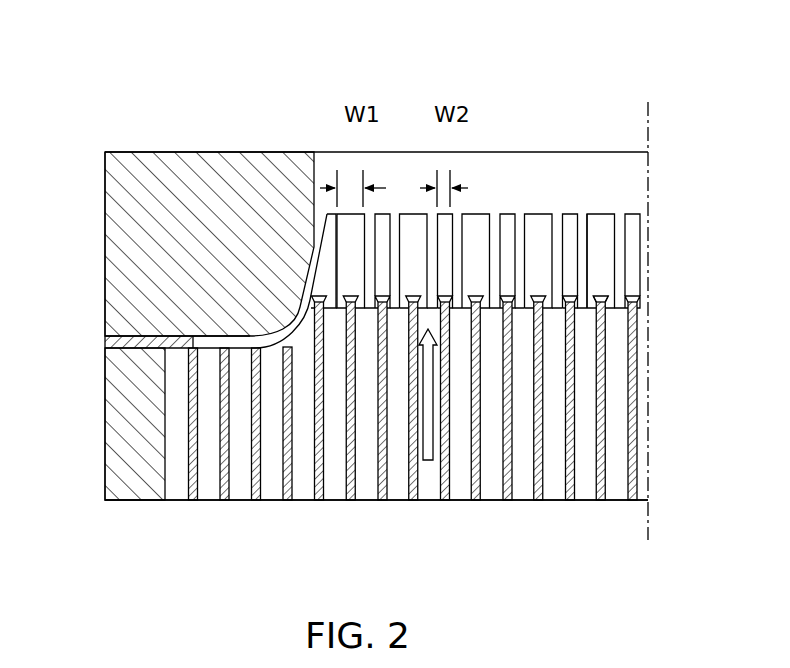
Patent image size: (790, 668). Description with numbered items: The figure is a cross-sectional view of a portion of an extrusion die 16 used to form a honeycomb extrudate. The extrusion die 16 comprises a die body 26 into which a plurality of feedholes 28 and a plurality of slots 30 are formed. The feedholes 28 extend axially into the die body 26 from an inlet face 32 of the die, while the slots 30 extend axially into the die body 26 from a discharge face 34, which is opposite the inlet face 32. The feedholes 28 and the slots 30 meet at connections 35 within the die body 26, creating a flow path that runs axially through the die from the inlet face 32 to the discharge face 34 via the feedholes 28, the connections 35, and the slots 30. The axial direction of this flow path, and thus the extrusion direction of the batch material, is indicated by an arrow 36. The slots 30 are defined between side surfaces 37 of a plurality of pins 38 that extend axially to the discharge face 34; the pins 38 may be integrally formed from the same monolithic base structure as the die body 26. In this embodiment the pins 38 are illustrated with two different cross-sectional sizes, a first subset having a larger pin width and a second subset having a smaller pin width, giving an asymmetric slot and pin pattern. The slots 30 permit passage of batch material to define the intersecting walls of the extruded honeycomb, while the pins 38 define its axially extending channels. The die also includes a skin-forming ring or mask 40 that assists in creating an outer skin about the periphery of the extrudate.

The extrusion die 16 is at (128, 81).
The die body 26 is at (135, 447).
The feedholes 28 is at (601, 466).
The slots 30 is at (505, 209).
The inlet face 32 is at (455, 503).
The discharge face 34 is at (484, 210).
The connections 35 is at (598, 295).
The arrow 36 is at (432, 460).
The side surfaces 37 is at (522, 248).
The pins 38 is at (605, 230).
The skin-forming ring or mask 40 is at (232, 178).